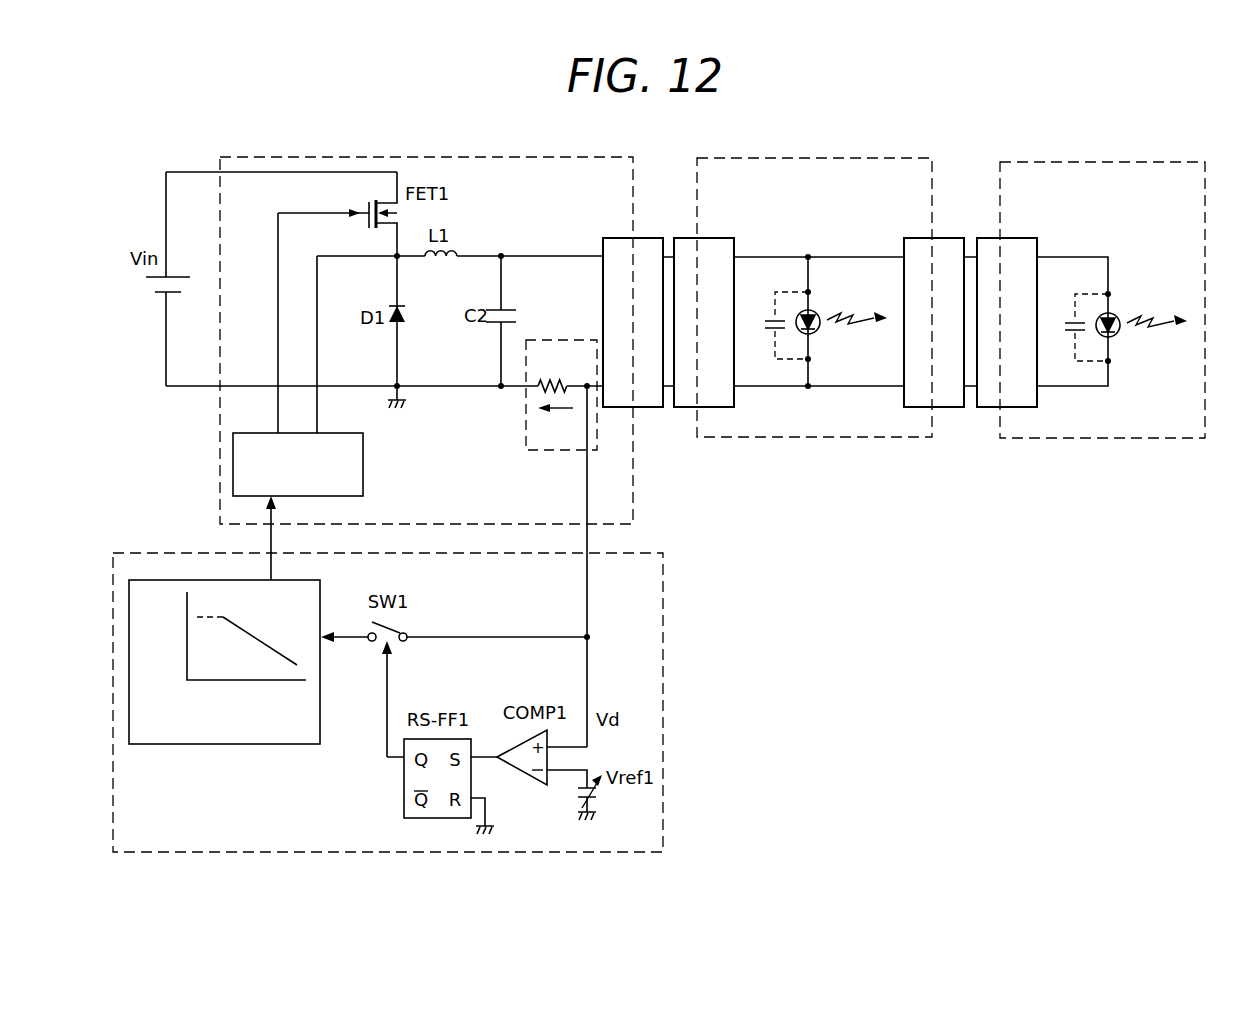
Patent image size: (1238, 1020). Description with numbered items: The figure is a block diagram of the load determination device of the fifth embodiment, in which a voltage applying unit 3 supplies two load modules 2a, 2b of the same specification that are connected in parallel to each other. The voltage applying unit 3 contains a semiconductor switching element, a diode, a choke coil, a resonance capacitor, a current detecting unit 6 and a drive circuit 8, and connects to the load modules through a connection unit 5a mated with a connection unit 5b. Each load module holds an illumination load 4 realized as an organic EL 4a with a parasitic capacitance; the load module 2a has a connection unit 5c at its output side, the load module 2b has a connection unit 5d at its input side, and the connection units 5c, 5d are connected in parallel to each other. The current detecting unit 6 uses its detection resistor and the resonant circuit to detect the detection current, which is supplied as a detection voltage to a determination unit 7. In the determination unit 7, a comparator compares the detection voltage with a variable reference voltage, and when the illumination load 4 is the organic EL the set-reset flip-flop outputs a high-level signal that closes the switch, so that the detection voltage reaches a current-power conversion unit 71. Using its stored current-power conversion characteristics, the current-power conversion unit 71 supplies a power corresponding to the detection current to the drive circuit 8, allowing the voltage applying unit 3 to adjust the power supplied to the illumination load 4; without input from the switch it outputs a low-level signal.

The voltage applying unit 3 is at (598, 157).
The load module 2a is at (860, 158).
The load module 2b is at (1048, 162).
The illumination load 4 is at (831, 280).
The organic EL 4a is at (817, 331).
The connection unit 5a is at (645, 409).
The connection unit 5b is at (708, 409).
The connection unit 5c is at (945, 409).
The connection unit 5d is at (1010, 409).
The current detecting unit 6 is at (561, 340).
The determination unit 7 is at (663, 587).
The drive circuit 8 is at (328, 433).
The current-power conversion unit 71 is at (276, 746).